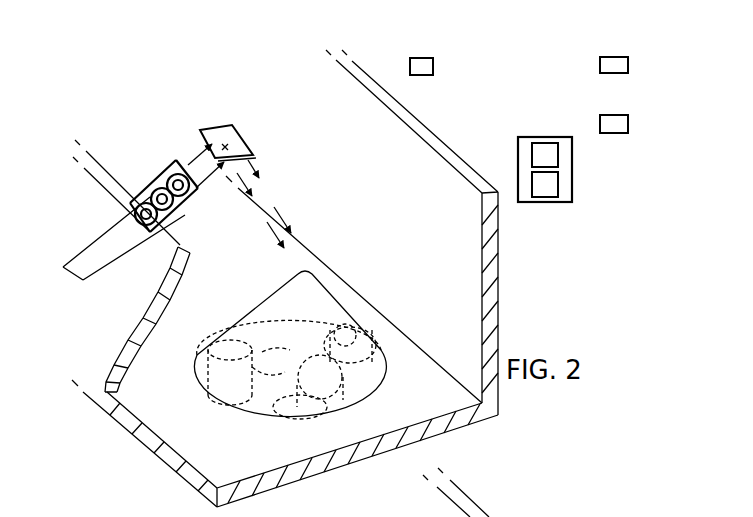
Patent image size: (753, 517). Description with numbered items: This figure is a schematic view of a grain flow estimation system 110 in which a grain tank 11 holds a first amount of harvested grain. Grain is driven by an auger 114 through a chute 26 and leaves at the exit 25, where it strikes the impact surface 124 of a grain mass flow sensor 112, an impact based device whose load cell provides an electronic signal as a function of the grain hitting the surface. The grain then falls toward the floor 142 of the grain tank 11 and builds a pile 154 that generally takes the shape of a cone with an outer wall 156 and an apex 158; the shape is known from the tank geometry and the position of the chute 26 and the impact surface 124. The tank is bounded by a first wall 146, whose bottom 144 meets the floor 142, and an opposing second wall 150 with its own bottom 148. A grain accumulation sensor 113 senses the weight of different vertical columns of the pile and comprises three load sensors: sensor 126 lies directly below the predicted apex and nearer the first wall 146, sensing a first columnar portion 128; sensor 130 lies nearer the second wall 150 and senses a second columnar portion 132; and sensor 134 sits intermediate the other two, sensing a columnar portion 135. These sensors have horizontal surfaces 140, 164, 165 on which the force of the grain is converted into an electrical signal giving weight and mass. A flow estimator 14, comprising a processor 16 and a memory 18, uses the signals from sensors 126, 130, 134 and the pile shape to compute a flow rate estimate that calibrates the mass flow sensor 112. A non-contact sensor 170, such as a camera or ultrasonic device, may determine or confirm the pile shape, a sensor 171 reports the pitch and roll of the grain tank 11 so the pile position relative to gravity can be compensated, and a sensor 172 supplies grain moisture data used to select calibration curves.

The grain tank 11 is at (507, 271).
The flow estimator 14 is at (548, 129).
The processor 16 is at (558, 153).
The memory 18 is at (545, 198).
The exit 25 is at (183, 155).
The chute 26 is at (111, 233).
The grain flow estimation system 110 is at (510, 76).
The grain mass flow sensor 112 is at (221, 106).
The grain accumulation sensor 113 is at (357, 374).
The auger 114 is at (142, 186).
The impact surface 124 is at (228, 148).
The sensor 126 is at (364, 364).
The first columnar portion 128 is at (290, 344).
The sensor 130 is at (237, 415).
The second columnar portion 132 is at (273, 359).
The sensor 134 is at (357, 455).
The columnar portion 135 is at (300, 414).
The surface 140 is at (356, 328).
The floor 142 is at (268, 458).
The bottom 144 is at (428, 352).
The first wall 146 is at (430, 128).
The bottom 148 is at (118, 393).
The second wall 150 is at (101, 328).
The pile 154 is at (235, 297).
The outer wall 156 is at (287, 292).
The apex 158 is at (308, 267).
The surface 164 is at (233, 396).
The surface 165 is at (323, 418).
The non-contact sensor 170 is at (433, 66).
The sensor 171 is at (603, 56).
The sensor 172 is at (607, 133).